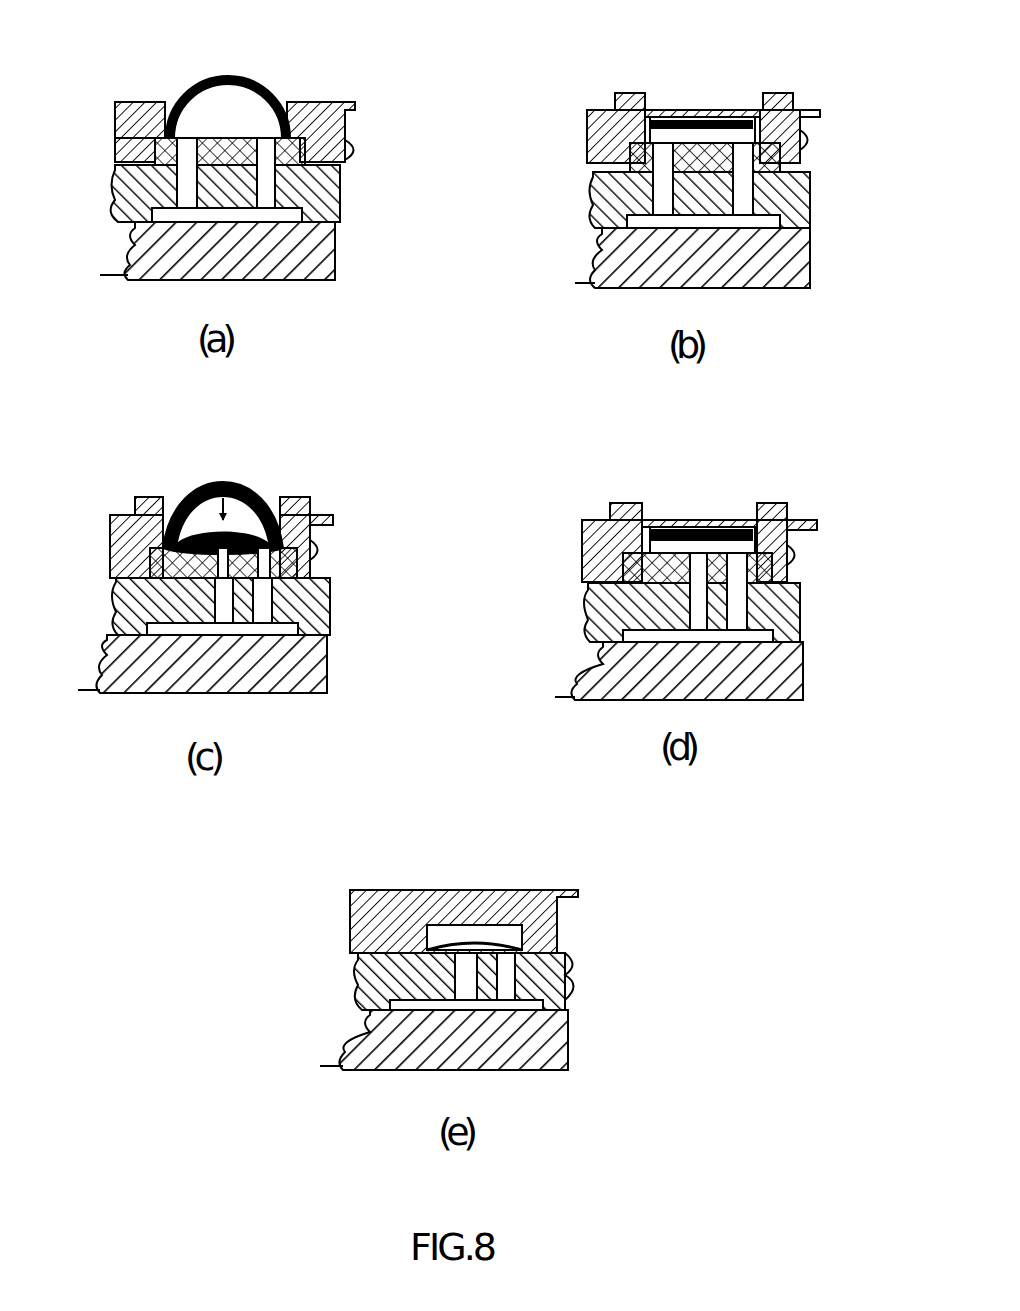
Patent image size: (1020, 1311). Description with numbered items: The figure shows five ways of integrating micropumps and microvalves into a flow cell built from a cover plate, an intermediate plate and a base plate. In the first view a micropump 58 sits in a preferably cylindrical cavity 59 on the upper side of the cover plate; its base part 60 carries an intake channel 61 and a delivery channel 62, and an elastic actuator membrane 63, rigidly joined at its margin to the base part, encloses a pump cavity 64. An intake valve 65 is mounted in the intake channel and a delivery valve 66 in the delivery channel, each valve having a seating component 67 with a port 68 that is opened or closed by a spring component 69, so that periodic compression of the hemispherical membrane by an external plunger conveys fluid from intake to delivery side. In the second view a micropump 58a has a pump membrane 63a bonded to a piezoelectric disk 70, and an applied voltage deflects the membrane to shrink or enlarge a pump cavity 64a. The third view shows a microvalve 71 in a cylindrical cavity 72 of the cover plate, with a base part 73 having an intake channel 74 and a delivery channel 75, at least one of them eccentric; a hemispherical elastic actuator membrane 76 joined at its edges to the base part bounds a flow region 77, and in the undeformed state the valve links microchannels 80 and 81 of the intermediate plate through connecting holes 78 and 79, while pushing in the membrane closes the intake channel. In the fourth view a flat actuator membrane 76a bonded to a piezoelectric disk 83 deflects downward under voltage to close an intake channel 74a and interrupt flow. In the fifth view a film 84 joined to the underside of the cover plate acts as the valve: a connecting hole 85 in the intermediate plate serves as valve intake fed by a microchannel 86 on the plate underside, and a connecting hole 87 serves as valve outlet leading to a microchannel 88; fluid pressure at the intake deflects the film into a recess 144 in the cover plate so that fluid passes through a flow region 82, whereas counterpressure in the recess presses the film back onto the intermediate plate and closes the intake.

The micropump 58 is at (195, 62).
The micropump 58a is at (683, 68).
The cavity 59 is at (340, 175).
The base part 60 is at (322, 152).
The intake channel 61 is at (120, 166).
The delivery channel 62 is at (318, 196).
The actuator membrane 63 is at (262, 88).
The pump membrane 63a is at (800, 133).
The pump cavity 64 is at (228, 112).
The pump cavity 64a is at (590, 165).
The intake valve 65 is at (142, 265).
The delivery valve 66 is at (290, 268).
The seating component 67 is at (155, 140).
The port 68 is at (300, 135).
The spring component 69 is at (150, 108).
The piezoelectric disk 70 is at (722, 122).
The microvalve 71 is at (246, 482).
The cavity 72 is at (170, 498).
The base part 73 is at (122, 560).
The intake channel 74 is at (205, 597).
The intake channel 74a is at (632, 598).
The delivery channel 75 is at (338, 580).
The actuator membrane 76 is at (280, 502).
The actuator membrane 76a is at (785, 555).
The flow region 77 is at (318, 537).
The connecting hole 78 is at (108, 632).
The connecting hole 79 is at (325, 622).
The microchannel 80 is at (168, 636).
The microchannel 81 is at (275, 700).
The flow region 82 is at (478, 935).
The piezoelectric disk 83 is at (700, 530).
The film 84 is at (565, 975).
The connecting hole 85 is at (352, 975).
The microchannel 86 is at (358, 1035).
The connecting hole 87 is at (572, 1000).
The microchannel 88 is at (572, 1040).
The recess 144 is at (445, 935).